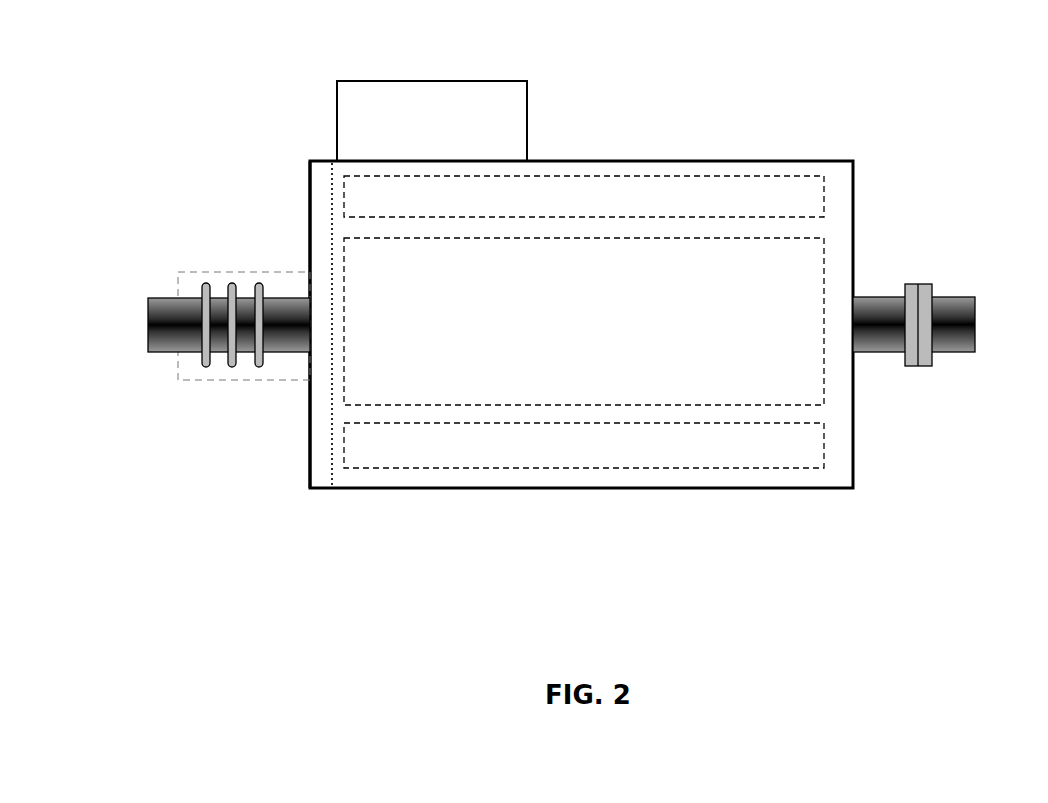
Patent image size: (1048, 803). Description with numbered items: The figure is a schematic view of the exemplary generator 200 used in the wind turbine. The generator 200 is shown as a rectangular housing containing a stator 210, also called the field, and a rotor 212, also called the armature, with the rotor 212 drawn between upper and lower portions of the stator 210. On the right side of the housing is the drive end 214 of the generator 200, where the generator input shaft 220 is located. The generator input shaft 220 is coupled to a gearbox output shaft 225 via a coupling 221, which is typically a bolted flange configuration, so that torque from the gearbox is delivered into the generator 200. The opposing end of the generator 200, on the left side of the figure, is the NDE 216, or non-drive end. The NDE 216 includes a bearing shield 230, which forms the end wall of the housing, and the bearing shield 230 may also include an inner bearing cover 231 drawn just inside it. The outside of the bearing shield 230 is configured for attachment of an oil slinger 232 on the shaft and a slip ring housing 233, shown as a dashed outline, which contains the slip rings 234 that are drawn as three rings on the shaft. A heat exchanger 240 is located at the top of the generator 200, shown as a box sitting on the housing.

The generator 200 is at (800, 74).
The stator 210 is at (517, 206).
The rotor 212 is at (590, 331).
The drive end 214 is at (910, 194).
The NDE 216 is at (262, 475).
The generator input shaft 220 is at (885, 353).
The coupling 221 is at (918, 284).
The gearbox output shaft 225 is at (976, 325).
The bearing shield 230 is at (318, 168).
The inner bearing cover 231 is at (314, 362).
The oil slinger 232 is at (300, 284).
The slip ring housing 233 is at (175, 272).
The slip rings 234 is at (258, 368).
The heat exchanger 240 is at (449, 132).